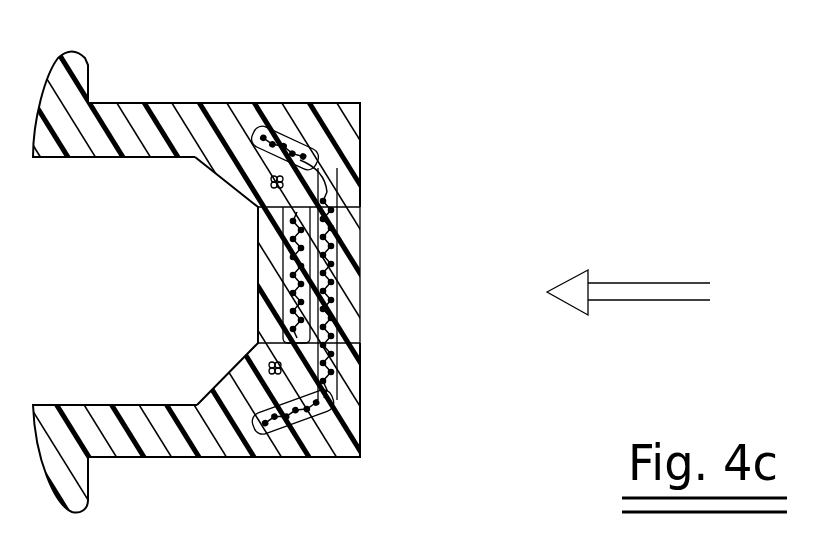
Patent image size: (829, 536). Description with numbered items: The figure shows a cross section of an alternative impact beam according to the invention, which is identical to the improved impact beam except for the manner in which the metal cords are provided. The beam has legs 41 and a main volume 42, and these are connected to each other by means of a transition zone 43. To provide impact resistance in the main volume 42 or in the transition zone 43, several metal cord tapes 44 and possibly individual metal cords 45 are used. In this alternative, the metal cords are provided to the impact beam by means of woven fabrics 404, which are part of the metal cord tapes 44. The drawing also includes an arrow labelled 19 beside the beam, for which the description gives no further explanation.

The legs 41 is at (196, 103).
The main volume 42 is at (257, 428).
The transition zone 43 is at (228, 281).
The metal cord tapes 44 is at (340, 228).
The individual metal cords 45 is at (427, 410).
The woven fabrics 404 is at (290, 268).
The flow direction arrow 19 is at (666, 295).